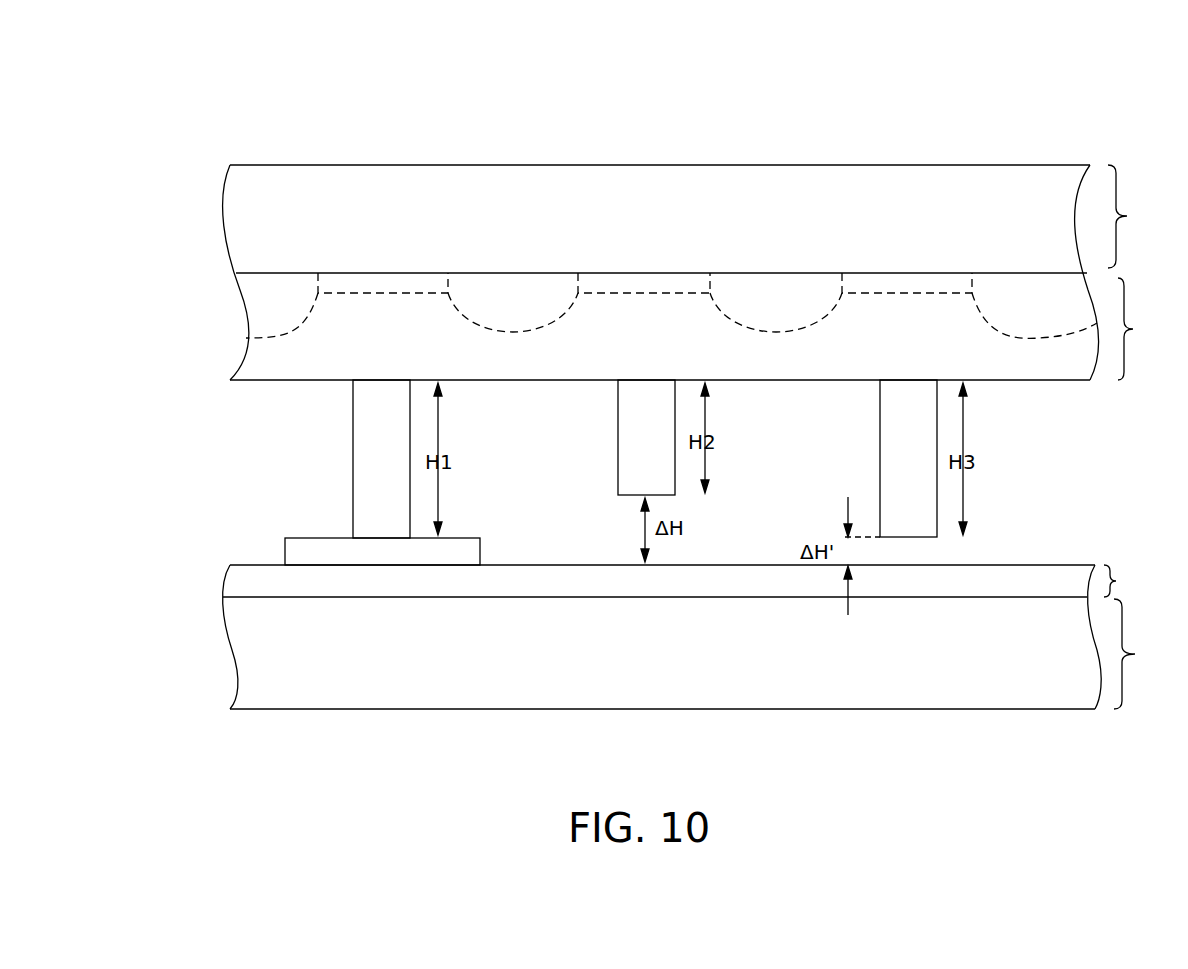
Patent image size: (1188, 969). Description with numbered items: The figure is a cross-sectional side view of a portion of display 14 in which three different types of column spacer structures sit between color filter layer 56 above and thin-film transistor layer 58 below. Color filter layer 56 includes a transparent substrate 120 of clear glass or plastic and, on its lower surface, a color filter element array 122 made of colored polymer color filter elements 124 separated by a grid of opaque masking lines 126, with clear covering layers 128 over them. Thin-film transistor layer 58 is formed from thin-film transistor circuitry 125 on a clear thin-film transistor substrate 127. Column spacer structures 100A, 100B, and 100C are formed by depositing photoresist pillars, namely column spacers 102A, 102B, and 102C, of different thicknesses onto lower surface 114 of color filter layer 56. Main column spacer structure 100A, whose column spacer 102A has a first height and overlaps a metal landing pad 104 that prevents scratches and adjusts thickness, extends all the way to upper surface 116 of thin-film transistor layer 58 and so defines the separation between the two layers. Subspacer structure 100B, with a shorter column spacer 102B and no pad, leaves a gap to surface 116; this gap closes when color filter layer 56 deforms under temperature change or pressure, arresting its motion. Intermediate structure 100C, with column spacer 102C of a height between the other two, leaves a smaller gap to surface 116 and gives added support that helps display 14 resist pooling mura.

The display 14 is at (197, 113).
The color filter layer 56 is at (664, 297).
The thin-film transistor layer 58 is at (666, 615).
The main column spacer structures 100A is at (335, 472).
The subspacer column spacer structures 100B is at (576, 471).
The intermediate column spacer structures 100C is at (826, 471).
The column spacer 102A is at (362, 452).
The column spacer 102B is at (615, 437).
The column spacer 102C is at (875, 458).
The landing pad 104 is at (382, 527).
The lower surface of color filter layer 114 is at (993, 380).
The upper surface of thin-film transistor layer 116 is at (1007, 565).
The substrate 120 is at (1138, 216).
The color filter element array 122 is at (707, 326).
The color filter elements 124 is at (485, 278).
The thin-film transistor circuitry 125 is at (689, 581).
The masking lines 126 is at (355, 278).
The thin-film transistor substrate 127 is at (1146, 654).
The covering layers 128 is at (1052, 367).